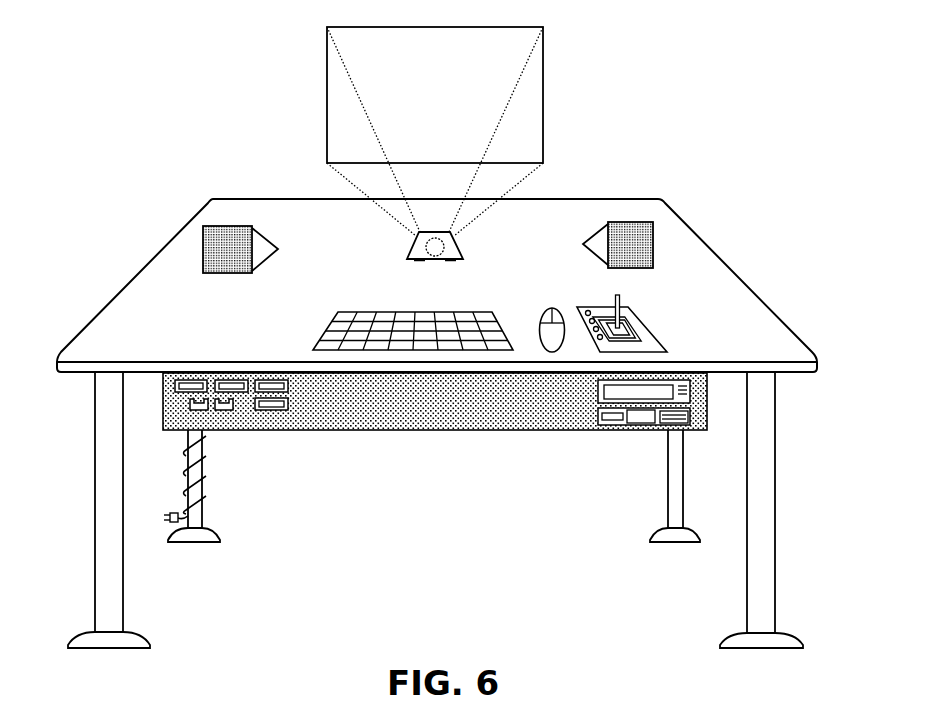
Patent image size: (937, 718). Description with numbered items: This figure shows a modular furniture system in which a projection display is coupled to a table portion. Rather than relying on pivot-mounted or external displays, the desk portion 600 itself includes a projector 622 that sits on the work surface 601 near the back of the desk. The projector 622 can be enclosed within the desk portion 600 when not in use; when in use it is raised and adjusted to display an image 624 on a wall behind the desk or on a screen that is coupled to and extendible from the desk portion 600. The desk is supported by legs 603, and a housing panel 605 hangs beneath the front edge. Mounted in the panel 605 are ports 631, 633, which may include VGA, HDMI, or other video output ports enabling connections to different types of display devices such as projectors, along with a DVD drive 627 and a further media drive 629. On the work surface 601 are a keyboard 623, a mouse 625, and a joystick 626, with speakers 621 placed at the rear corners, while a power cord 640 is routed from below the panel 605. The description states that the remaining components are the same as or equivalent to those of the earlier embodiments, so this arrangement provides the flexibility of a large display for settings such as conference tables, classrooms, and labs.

The desk portion 600 is at (187, 223).
The work surface 601 is at (540, 253).
The legs 603 is at (95, 430).
The housing panel 605 is at (395, 430).
The speakers 621 is at (648, 220).
The projector 622 is at (417, 243).
The keyboard 623 is at (320, 330).
The image 624 is at (327, 120).
The mouse 625 is at (552, 352).
The joystick 626 is at (632, 322).
The DVD drive 627 is at (695, 400).
The media drive 629 is at (703, 427).
The ports 631 is at (273, 410).
The ports 633 is at (227, 410).
The power cord 640 is at (168, 513).